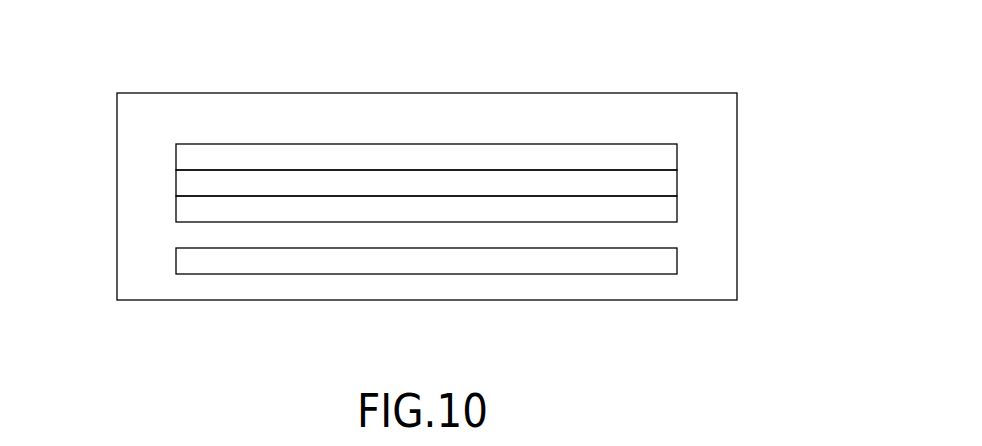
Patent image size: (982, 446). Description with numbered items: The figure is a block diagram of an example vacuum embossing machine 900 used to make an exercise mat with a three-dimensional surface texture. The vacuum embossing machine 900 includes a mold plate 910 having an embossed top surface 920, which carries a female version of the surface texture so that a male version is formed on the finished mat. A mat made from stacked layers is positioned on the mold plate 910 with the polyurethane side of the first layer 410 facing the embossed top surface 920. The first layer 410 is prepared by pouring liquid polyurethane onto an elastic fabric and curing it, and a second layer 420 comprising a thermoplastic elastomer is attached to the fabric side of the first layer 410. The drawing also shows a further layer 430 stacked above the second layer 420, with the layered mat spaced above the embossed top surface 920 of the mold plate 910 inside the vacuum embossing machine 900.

The vacuum embossing machine 900 is at (225, 110).
The third layer 430 is at (670, 154).
The second layer 420 is at (667, 181).
The first layer 410 is at (667, 207).
The mold plate 910 is at (192, 267).
The embossed top surface 920 is at (193, 246).